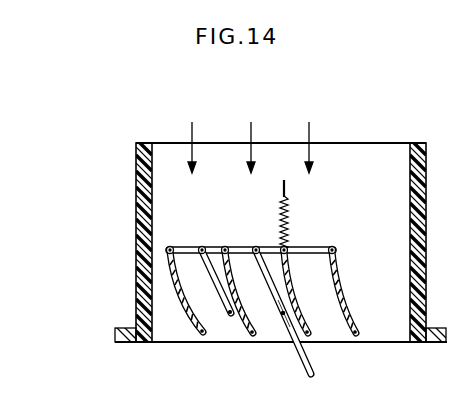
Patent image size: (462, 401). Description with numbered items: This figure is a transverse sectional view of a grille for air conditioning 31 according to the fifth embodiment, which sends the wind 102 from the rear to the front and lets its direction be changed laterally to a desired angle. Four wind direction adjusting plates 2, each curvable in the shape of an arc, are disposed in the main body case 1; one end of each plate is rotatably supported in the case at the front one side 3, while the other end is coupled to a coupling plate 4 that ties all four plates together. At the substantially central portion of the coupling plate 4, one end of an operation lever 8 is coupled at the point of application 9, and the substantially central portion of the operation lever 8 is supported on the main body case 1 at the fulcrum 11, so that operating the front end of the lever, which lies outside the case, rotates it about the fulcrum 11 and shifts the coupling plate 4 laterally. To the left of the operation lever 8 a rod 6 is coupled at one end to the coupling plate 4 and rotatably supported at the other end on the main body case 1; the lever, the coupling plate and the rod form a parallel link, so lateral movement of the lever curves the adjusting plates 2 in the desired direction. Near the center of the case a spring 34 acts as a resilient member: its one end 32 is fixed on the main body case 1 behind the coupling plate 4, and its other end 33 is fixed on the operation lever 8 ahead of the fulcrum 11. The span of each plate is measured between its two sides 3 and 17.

The main body case 1 is at (428, 152).
The grille for air conditioning 31 is at (127, 156).
The wind 102 is at (192, 131).
The one end of spring 32 is at (283, 177).
The spring 34 is at (288, 213).
The coupling plate 4 is at (295, 247).
The front one side 3 is at (169, 245).
The point of application 9 is at (255, 245).
The wind direction adjusting plate 2 is at (174, 296).
The rod 6 is at (207, 272).
The operation lever 8 is at (307, 356).
The fulcrum 11 is at (280, 312).
The other end of spring 33 is at (291, 340).
The other side of wind direction adjusting plate 17 is at (367, 317).